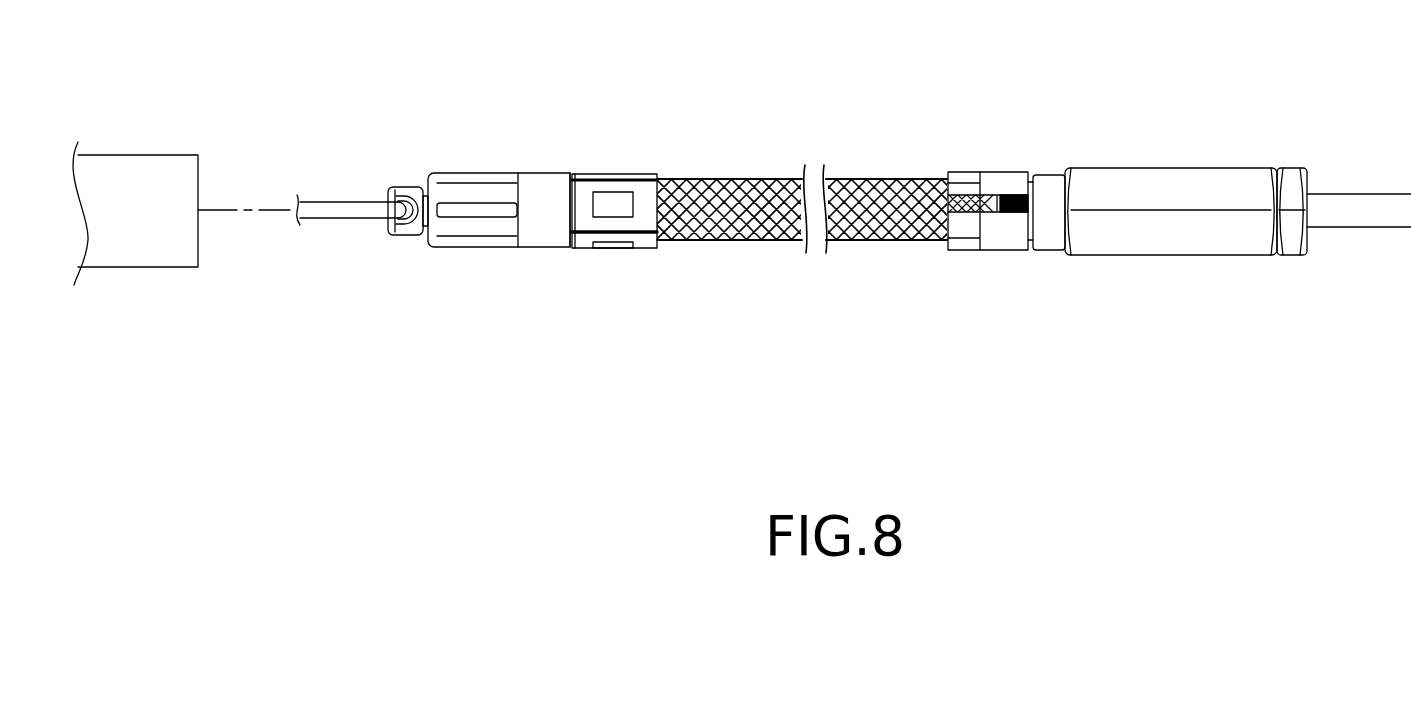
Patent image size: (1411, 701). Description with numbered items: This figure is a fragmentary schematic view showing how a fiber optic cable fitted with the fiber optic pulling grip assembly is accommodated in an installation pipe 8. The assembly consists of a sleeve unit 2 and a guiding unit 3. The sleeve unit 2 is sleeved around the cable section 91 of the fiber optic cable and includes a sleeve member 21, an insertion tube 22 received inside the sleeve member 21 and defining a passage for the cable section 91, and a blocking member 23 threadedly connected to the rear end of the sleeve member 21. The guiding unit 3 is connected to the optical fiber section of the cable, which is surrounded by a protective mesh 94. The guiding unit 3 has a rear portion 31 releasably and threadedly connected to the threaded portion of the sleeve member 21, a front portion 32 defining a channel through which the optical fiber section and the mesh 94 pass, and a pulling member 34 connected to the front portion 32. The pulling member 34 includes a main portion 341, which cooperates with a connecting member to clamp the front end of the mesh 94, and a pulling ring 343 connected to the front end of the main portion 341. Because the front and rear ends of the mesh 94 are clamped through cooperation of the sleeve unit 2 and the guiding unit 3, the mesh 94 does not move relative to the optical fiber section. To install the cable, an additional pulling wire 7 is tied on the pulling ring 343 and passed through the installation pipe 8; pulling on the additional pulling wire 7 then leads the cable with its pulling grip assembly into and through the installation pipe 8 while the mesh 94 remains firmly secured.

The sleeve unit 2 is at (1155, 128).
The guiding unit 3 is at (533, 125).
The additional pulling wire 7 is at (333, 220).
The installation pipe 8 is at (145, 160).
The sleeve member 21 is at (1119, 178).
The insertion tube 22 is at (463, 178).
The blocking member 23 is at (1295, 175).
The rear portion 31 is at (1006, 234).
The front portion 32 is at (608, 175).
The pulling member 34 is at (505, 318).
The cable section 91 is at (1388, 198).
The mesh 94 is at (873, 178).
The main portion 341 is at (547, 233).
The pulling ring 343 is at (403, 232).